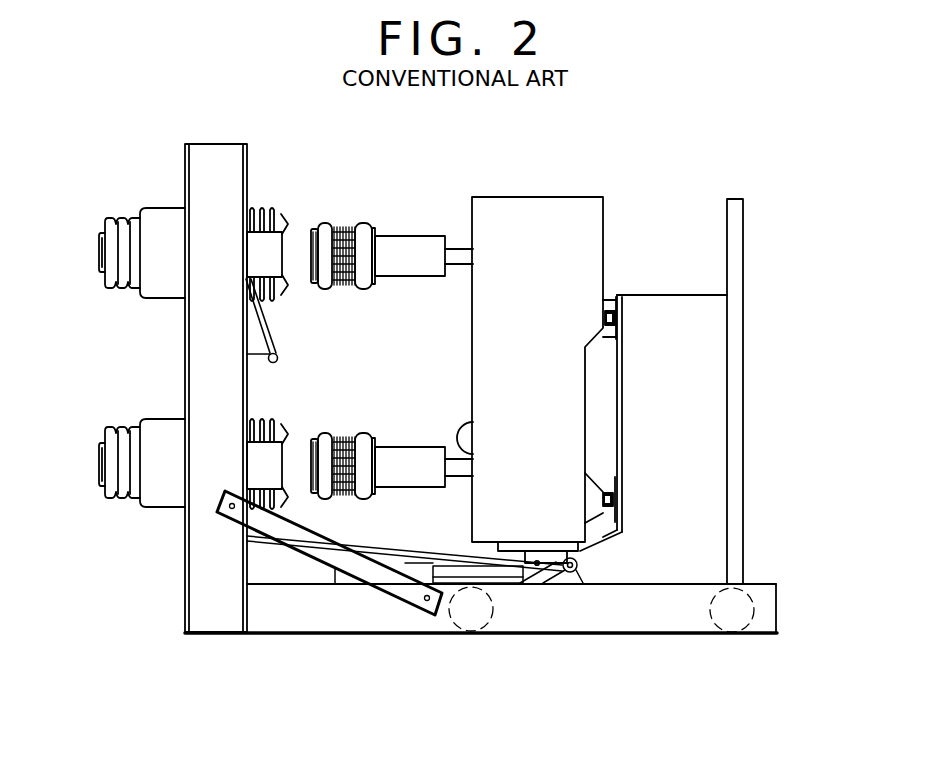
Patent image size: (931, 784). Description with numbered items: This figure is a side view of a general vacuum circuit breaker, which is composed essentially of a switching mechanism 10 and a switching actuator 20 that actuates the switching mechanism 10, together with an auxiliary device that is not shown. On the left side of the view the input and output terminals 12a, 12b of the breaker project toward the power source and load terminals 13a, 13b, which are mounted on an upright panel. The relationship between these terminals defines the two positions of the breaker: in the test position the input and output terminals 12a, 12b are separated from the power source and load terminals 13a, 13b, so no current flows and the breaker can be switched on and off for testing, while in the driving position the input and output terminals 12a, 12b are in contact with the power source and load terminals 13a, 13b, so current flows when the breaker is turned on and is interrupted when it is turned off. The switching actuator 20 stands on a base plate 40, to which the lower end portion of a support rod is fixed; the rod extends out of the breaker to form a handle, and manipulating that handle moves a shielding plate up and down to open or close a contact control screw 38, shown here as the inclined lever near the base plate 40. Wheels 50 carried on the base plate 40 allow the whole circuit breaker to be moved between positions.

The switching mechanism 10 is at (540, 330).
The switching actuator 20 is at (684, 394).
The input terminal 12a is at (412, 243).
The output terminal 12b is at (412, 453).
The power source terminal 13a is at (258, 208).
The load terminal 13b is at (258, 425).
The contact control screw 38 is at (342, 580).
The base plate 40 is at (595, 618).
The wheels 50 is at (748, 602).